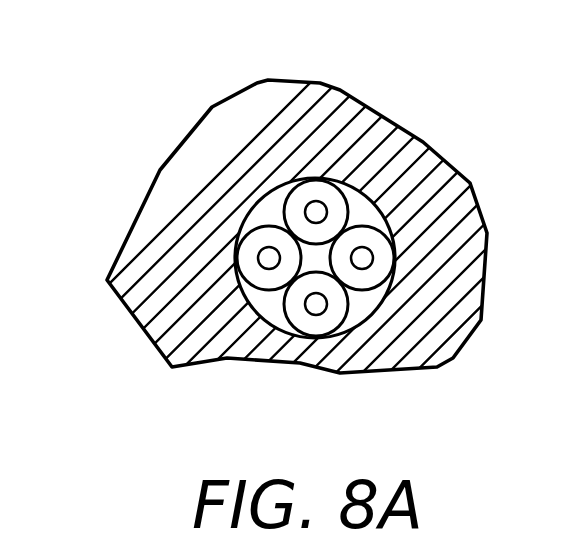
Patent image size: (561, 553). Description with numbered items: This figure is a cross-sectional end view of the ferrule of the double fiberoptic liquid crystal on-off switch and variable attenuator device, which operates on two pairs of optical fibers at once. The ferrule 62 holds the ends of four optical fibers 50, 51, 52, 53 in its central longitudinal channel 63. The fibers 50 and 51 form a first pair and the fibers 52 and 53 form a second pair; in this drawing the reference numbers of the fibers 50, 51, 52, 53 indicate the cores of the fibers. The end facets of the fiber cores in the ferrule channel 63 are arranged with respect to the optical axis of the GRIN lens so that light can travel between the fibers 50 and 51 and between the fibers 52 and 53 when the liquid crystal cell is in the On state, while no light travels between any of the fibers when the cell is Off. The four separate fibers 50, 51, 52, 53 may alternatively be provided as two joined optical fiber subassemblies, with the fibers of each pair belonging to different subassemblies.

The optical fiber 50 is at (308, 193).
The optical fiber 51 is at (315, 327).
The optical fiber 52 is at (245, 250).
The optical fiber 53 is at (368, 278).
The ferrule 62 is at (395, 145).
The central longitudinal channel 63 is at (273, 305).